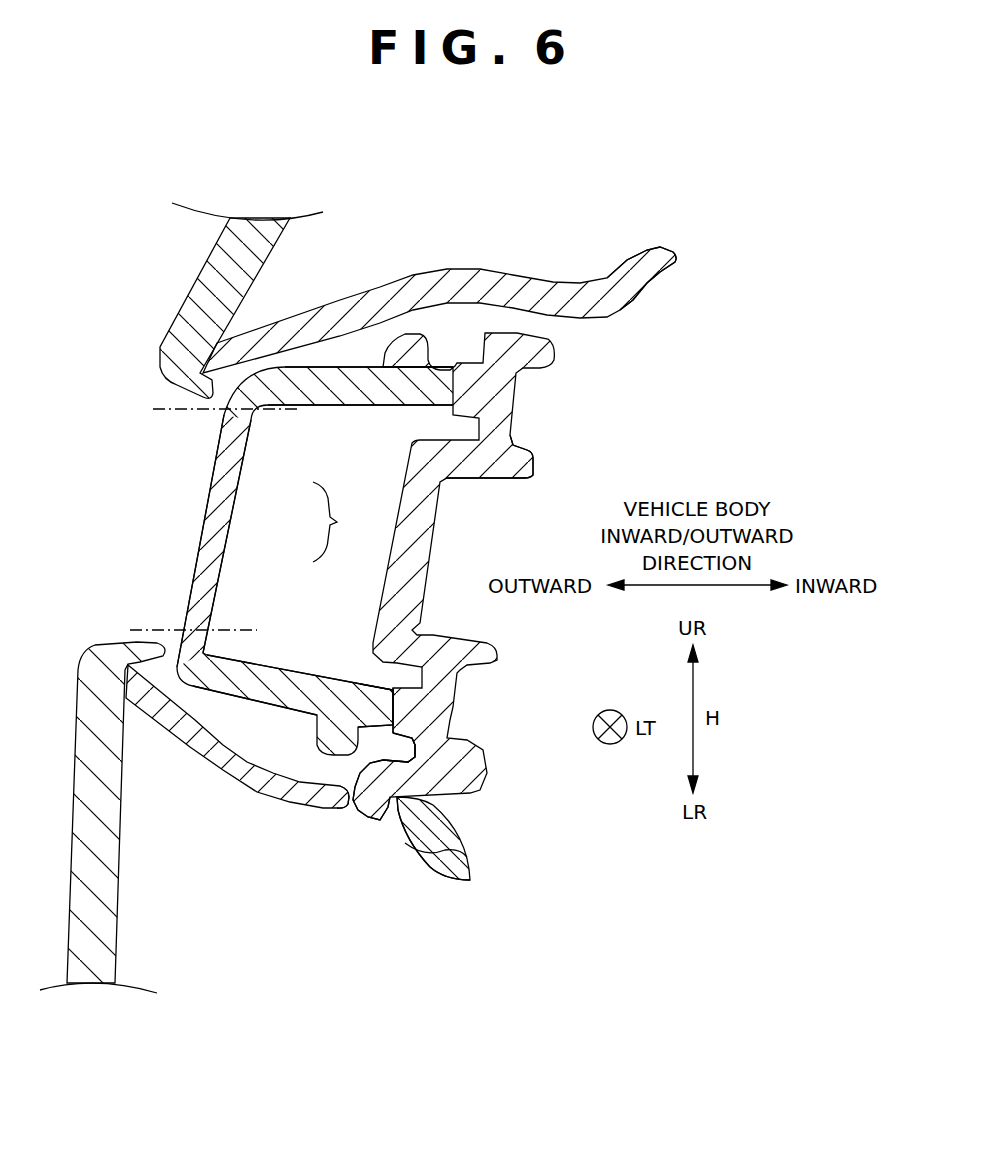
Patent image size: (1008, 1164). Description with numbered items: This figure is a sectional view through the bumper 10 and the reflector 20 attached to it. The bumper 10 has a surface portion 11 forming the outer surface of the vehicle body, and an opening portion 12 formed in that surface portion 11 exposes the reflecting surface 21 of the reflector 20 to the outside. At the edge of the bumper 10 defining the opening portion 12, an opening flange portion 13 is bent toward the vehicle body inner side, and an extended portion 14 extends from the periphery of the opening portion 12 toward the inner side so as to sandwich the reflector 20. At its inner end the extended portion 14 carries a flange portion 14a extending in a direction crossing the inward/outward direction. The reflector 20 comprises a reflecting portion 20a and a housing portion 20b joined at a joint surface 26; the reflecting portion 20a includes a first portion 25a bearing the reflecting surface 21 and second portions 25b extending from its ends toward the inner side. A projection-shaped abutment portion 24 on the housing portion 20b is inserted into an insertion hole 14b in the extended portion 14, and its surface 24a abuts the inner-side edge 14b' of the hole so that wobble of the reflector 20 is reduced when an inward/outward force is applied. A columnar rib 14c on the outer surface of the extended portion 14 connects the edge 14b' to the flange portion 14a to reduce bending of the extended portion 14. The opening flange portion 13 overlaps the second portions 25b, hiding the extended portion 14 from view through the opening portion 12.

The bumper 10 is at (165, 223).
The surface portion 11 is at (203, 283).
The opening portion 12 is at (158, 503).
The opening flange portion 13 is at (207, 398).
The extended portion 14 is at (510, 280).
The flange portion 14a is at (653, 257).
The insertion hole 14b is at (325, 828).
The edge of the insertion hole 14b' is at (402, 879).
The rib 14c is at (455, 878).
The reflector 20 is at (565, 411).
The reflecting portion 20a is at (350, 522).
The housing portion 20b is at (530, 467).
The reflecting surface 21 is at (197, 561).
The abutment portion 24 is at (367, 813).
The surface of the abutment portion 24a is at (389, 813).
The first portion 25a is at (230, 500).
The second portion 25b is at (320, 392).
The joint surface 26 is at (380, 707).